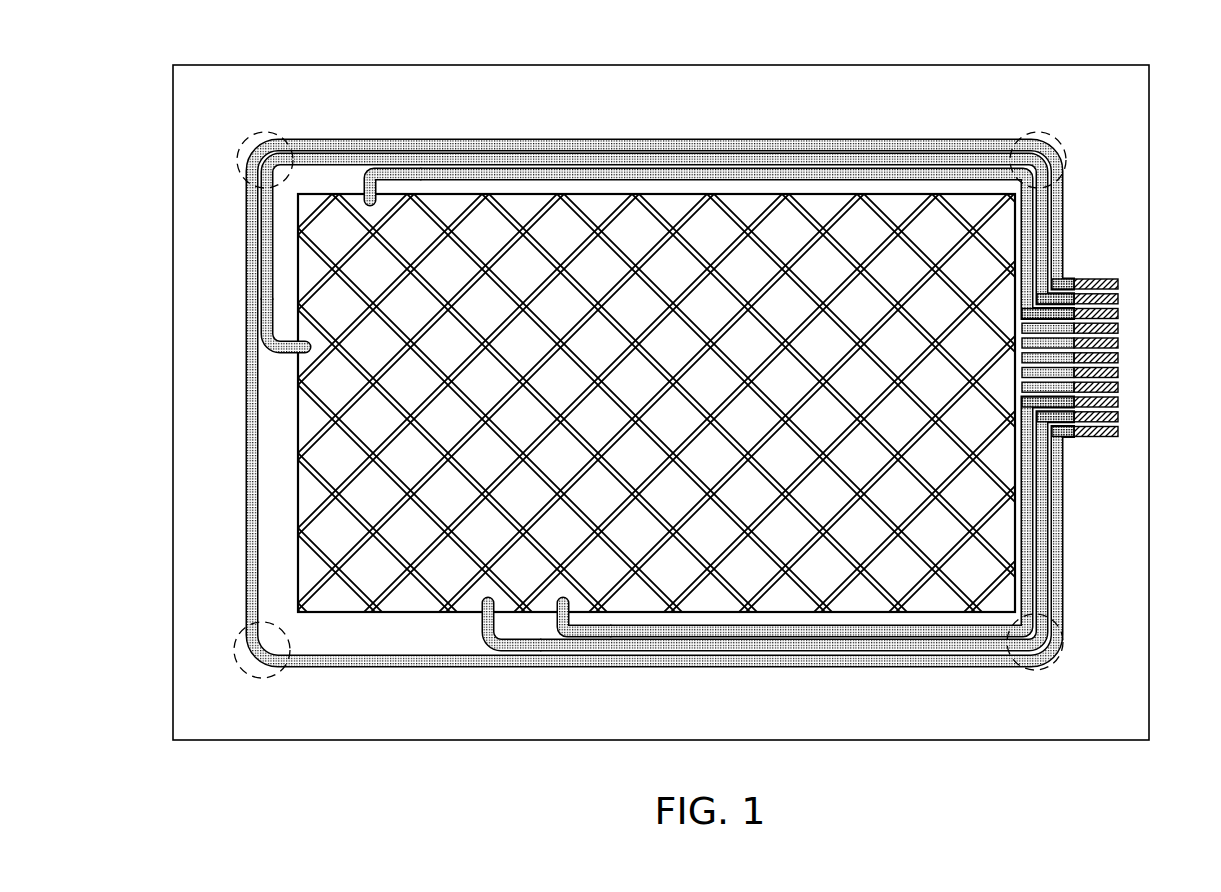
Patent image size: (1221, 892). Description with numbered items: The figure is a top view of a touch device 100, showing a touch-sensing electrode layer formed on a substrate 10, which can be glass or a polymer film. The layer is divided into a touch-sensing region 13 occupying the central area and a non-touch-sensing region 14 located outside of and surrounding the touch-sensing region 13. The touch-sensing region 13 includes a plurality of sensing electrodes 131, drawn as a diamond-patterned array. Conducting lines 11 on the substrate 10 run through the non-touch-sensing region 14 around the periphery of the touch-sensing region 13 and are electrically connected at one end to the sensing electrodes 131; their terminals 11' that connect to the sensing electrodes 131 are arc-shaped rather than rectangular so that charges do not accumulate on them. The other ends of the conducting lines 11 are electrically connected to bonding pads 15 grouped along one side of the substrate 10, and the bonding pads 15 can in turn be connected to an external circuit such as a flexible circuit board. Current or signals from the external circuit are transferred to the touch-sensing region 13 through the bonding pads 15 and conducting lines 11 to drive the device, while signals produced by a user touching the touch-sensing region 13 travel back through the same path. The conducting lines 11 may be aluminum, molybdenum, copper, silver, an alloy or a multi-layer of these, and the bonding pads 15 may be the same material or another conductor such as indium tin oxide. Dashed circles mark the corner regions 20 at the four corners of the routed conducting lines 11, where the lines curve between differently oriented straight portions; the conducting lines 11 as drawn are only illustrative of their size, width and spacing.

The touch device 100 is at (138, 112).
The substrate 10 is at (173, 160).
The non-touch-sensing region 14 is at (1140, 190).
The touch-sensing region 13 is at (297, 212).
The sensing electrode 131 is at (370, 580).
The conducting line 11 is at (663, 383).
The terminal 11' is at (360, 446).
The bonding pad 15 is at (1117, 418).
The corner region 20 is at (274, 128).